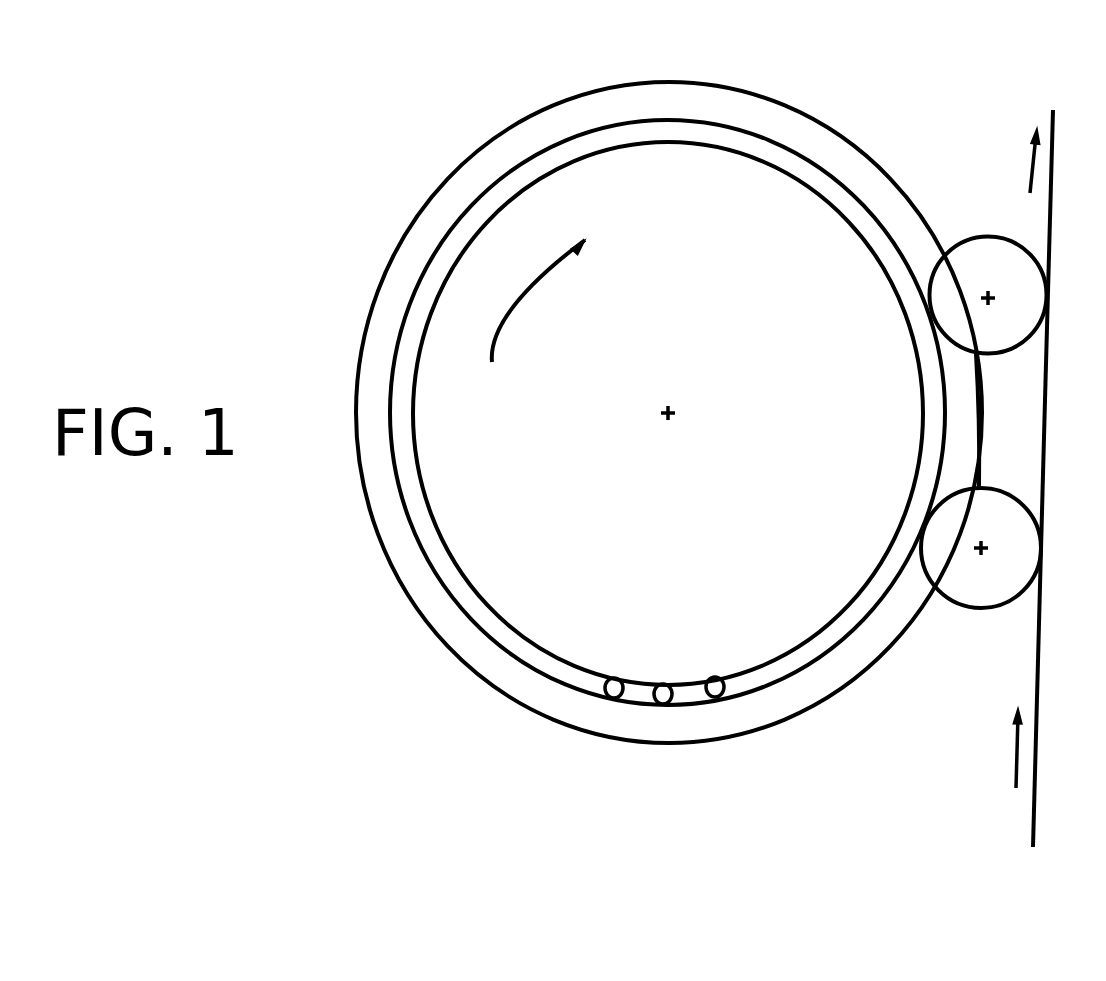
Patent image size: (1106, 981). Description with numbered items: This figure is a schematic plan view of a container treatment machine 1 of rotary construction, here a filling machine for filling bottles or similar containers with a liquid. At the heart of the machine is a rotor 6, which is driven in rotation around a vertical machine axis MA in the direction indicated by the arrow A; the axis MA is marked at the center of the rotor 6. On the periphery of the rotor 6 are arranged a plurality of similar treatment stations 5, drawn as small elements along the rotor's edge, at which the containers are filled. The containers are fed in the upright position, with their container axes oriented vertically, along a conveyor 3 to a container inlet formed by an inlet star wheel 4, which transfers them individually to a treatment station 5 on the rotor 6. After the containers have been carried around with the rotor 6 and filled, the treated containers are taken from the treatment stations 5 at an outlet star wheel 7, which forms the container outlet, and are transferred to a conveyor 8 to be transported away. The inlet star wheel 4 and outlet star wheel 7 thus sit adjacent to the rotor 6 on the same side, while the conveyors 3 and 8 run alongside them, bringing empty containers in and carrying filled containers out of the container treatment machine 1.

The container treatment machine 1 is at (932, 110).
The conveyor 3 is at (1038, 722).
The inlet star wheel 4 is at (1022, 537).
The treatment station 5 is at (667, 708).
The rotor 6 is at (830, 252).
The outlet star wheel 7 is at (1025, 308).
The conveyor 8 is at (1053, 190).
The vertical machine axis MA is at (678, 403).
The arrow indicating direction of rotation A is at (538, 301).